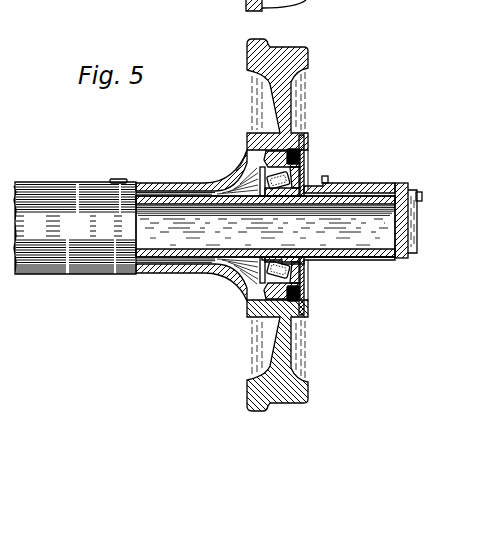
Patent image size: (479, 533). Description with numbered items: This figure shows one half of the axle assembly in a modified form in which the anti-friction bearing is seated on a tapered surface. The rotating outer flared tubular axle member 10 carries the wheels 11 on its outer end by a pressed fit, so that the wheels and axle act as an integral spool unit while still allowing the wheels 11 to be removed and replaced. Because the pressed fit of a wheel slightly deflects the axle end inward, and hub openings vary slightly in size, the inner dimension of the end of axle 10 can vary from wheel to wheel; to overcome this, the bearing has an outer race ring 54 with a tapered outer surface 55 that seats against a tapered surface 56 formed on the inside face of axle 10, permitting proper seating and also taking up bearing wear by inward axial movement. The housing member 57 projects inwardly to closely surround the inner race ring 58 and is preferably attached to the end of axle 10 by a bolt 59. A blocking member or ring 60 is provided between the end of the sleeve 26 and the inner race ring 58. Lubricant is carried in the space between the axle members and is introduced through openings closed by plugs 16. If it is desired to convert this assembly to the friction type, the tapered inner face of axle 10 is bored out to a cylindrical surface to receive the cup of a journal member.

The outer flared tubular axle member 10 is at (171, 182).
The wheels 11 is at (283, 55).
The plugs 16 is at (118, 180).
The sleeve 26 is at (390, 188).
The outer race ring 54 is at (305, 157).
The tapered outer surface 55 is at (281, 149).
The tapered surface 56 is at (246, 148).
The housing member 57 is at (307, 168).
The inner race ring 58 is at (327, 179).
The bolt 59 is at (292, 158).
The blocking member or ring 60 is at (306, 270).